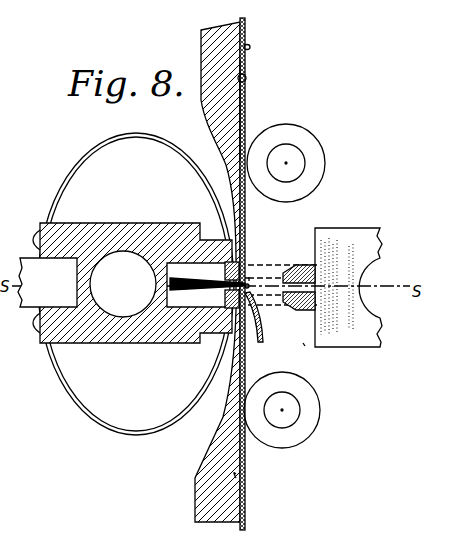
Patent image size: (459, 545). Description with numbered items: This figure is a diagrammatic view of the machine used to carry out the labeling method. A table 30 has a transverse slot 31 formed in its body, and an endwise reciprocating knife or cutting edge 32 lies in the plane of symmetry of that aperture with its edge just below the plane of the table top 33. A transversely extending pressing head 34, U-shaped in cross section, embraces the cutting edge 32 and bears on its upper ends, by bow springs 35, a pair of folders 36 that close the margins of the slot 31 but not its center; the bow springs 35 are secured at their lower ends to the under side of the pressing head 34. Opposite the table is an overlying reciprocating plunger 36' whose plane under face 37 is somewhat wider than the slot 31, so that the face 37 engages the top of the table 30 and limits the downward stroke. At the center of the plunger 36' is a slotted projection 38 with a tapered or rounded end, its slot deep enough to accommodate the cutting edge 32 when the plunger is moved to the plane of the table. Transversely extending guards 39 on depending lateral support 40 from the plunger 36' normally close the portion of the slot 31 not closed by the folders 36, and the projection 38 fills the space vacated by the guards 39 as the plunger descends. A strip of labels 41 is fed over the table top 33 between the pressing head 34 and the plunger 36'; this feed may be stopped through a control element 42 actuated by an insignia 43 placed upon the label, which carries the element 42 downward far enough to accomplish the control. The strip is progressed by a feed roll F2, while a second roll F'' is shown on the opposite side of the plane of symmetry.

The table 30 is at (220, 488).
The transverse slot 31 is at (245, 236).
The reciprocating knife or cutting edge 32 is at (183, 291).
The top of the table 33 is at (244, 78).
The pressing head 34 is at (62, 330).
The bow springs 35 is at (67, 158).
The folders 36 is at (210, 250).
The reciprocating plunger 36' is at (372, 282).
The under face of the plunger 37 is at (305, 344).
The slotted projection 38 is at (306, 300).
The guards 39 is at (247, 268).
The depending lateral support 40 is at (263, 306).
The strip of labels 41 is at (246, 108).
The control element 42 is at (262, 340).
The insignia 43 is at (249, 47).
The feed roll F2 is at (318, 170).
The feed roller F'' is at (297, 418).